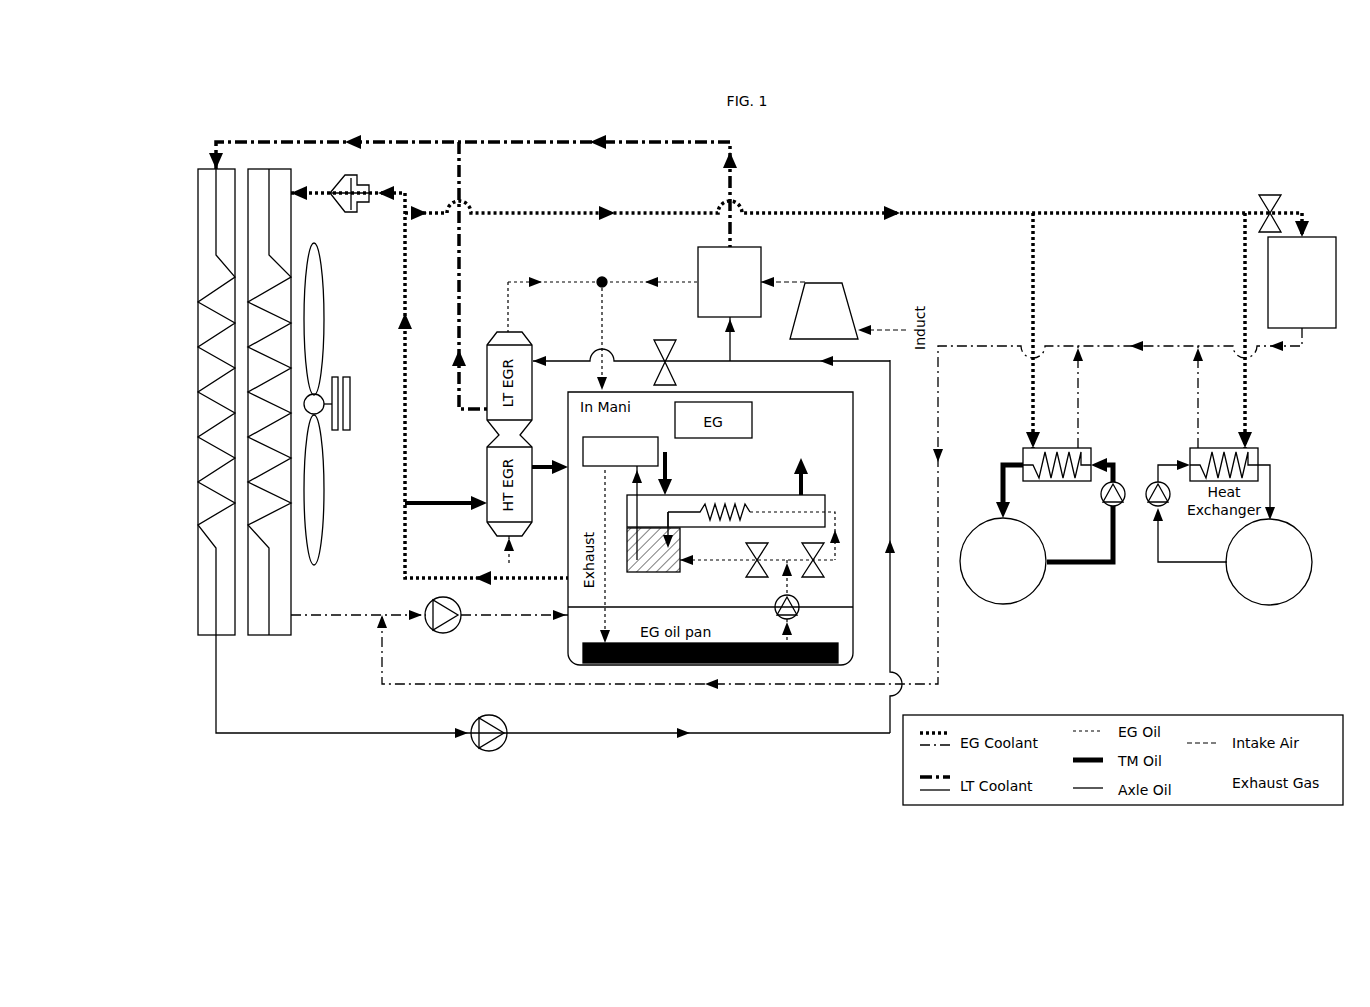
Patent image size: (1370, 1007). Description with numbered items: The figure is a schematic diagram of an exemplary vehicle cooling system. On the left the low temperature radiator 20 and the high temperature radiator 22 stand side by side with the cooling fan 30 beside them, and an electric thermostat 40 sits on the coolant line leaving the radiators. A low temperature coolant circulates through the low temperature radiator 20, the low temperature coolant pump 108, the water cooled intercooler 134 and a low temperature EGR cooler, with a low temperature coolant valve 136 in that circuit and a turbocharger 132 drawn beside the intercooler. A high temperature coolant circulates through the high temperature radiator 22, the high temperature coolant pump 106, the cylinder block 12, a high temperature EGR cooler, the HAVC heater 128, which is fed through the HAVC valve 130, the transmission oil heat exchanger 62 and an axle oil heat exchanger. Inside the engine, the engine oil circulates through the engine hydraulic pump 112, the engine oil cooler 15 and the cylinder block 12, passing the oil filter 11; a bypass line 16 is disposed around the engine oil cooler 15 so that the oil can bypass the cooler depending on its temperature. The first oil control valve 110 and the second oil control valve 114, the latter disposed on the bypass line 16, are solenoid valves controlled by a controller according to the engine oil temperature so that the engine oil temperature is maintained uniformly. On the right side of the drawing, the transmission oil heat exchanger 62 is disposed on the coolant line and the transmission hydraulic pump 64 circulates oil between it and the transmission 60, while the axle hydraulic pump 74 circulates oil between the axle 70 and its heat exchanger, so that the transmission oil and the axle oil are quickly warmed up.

The oil filter 11 is at (627, 530).
The cylinder block 12 is at (583, 447).
The engine oil cooler 15 is at (818, 495).
The bypass line 16 is at (835, 515).
The low temperature radiator 20 is at (198, 462).
The high temperature radiator 22 is at (255, 509).
The cooling fan 30 is at (322, 530).
The electric thermostat 40 is at (355, 175).
The transmission 60 is at (1003, 604).
The transmission oil heat exchanger 62 is at (1085, 451).
The transmission hydraulic pump 64 is at (1121, 486).
The axle 70 is at (1270, 605).
The axle hydraulic pump 74 is at (1166, 504).
The high temperature coolant pump 106 is at (458, 625).
The low temperature coolant pump 108 is at (504, 745).
The first oil control valve 110 is at (746, 549).
The engine hydraulic pump 112 is at (777, 615).
The second oil control valve 114 is at (824, 572).
The HAVC heater 128 is at (1318, 328).
The HAVC valve 130 is at (1268, 195).
The turbocharger 132 is at (842, 290).
The water cooled intercooler 134 is at (761, 252).
The low temperature coolant valve 136 is at (676, 375).